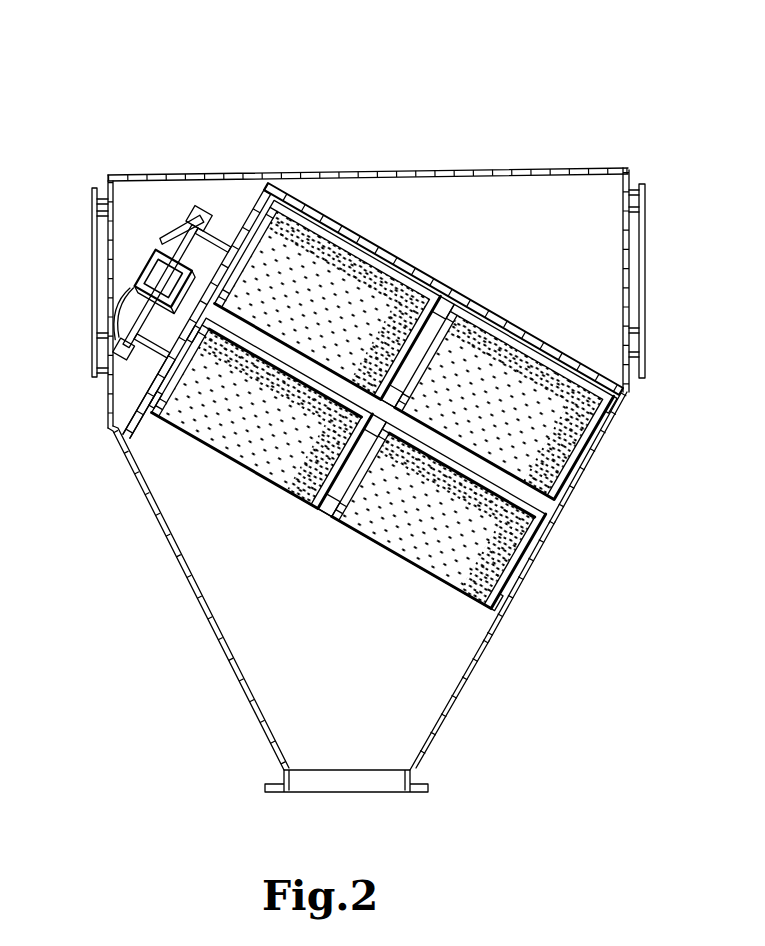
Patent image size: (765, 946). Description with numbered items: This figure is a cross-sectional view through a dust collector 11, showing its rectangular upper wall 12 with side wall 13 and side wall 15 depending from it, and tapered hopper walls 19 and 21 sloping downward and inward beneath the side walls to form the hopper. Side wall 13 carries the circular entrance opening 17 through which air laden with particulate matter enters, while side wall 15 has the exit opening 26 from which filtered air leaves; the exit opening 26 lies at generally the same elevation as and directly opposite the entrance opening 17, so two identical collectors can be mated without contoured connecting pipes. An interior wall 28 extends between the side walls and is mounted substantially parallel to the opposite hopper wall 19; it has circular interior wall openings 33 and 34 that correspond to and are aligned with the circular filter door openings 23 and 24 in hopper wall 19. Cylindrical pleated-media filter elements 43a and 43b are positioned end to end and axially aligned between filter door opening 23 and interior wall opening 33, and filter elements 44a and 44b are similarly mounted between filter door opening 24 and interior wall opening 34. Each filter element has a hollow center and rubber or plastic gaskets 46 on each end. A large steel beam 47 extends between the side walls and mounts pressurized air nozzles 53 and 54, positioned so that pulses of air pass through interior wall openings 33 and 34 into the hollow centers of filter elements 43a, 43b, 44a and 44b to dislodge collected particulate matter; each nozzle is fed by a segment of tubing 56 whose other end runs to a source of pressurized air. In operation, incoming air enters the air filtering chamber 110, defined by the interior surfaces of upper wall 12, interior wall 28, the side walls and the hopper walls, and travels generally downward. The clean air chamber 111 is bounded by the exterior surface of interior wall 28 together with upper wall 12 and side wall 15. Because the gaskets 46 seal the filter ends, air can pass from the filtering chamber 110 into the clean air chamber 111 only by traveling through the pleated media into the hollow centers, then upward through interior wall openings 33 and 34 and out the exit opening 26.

The dust collector 11 is at (366, 128).
The upper wall 12 is at (520, 170).
The side wall 13 is at (632, 184).
The side wall 15 is at (108, 185).
The entrance opening 17 is at (645, 232).
The hopper wall 19 is at (452, 706).
The hopper wall 21 is at (258, 736).
The filter door opening 23 is at (549, 582).
The filter door opening 24 is at (614, 472).
The exit opening 26 is at (92, 266).
The interior wall 28 is at (260, 192).
The interior wall opening 33 is at (141, 369).
The interior wall opening 34 is at (234, 211).
The filter element 43a is at (296, 496).
The filter element 43b is at (434, 560).
The filter element 44a is at (412, 300).
The filter element 44b is at (542, 380).
The gasket 46 is at (151, 406).
The beam 47 is at (153, 262).
The pressurized air nozzle 53 is at (118, 348).
The pressurized air nozzle 54 is at (197, 205).
The tubing 56 is at (186, 225).
The air filtering chamber 110 is at (262, 697).
The clean air chamber 111 is at (122, 250).